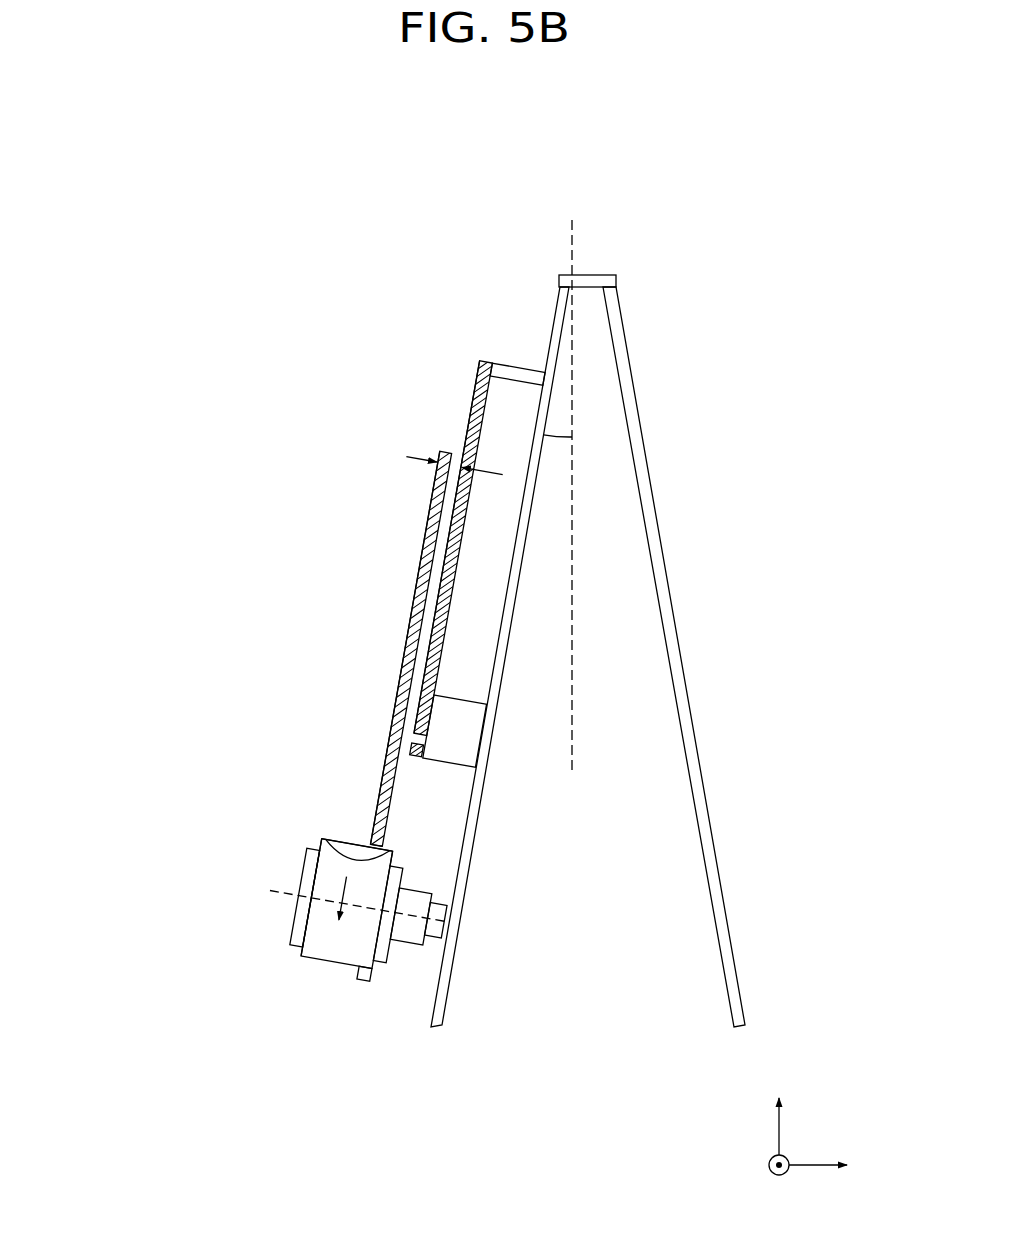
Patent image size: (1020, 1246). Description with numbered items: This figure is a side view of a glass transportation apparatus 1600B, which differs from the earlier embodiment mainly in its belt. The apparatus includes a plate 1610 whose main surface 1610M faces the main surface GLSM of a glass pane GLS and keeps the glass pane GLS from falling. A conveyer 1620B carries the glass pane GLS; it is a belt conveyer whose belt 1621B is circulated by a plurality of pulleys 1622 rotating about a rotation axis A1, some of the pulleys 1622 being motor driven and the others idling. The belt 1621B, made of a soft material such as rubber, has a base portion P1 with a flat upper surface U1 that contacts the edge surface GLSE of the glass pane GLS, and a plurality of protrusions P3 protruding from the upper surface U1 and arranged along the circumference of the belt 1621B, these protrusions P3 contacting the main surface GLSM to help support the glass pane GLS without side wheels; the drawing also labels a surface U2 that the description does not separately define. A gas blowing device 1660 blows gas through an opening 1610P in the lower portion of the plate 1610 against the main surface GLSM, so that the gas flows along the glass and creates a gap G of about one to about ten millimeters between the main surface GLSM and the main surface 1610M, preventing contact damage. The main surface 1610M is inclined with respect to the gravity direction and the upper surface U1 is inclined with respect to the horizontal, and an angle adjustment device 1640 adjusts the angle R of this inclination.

The glass transportation apparatus 1600B is at (730, 194).
The plate 1610 is at (481, 367).
The main surface of the plate 1610M is at (475, 401).
The opening of the plate 1610P is at (409, 733).
The angle adjustment device 1640 is at (627, 373).
The gas blowing device 1660 is at (442, 723).
The glass pane GLS is at (437, 503).
The main surface of the glass pane GLSM is at (427, 538).
The edge surface of the glass pane GLSE is at (373, 840).
The gap G is at (454, 452).
The angle R is at (558, 451).
The conveyer 1620B is at (304, 876).
The belt 1621B is at (349, 876).
The pulleys 1622 is at (307, 877).
The upper surface of the base portion U1 is at (360, 845).
The second surface U2 is at (392, 840).
The base portion P1 is at (327, 872).
The protrusions P3 is at (345, 850).
The rotation axis A1 is at (343, 902).